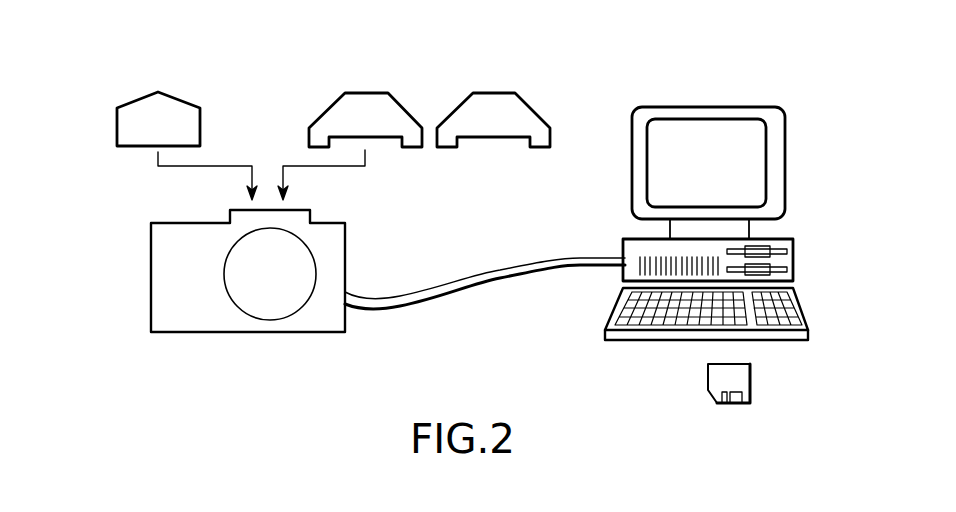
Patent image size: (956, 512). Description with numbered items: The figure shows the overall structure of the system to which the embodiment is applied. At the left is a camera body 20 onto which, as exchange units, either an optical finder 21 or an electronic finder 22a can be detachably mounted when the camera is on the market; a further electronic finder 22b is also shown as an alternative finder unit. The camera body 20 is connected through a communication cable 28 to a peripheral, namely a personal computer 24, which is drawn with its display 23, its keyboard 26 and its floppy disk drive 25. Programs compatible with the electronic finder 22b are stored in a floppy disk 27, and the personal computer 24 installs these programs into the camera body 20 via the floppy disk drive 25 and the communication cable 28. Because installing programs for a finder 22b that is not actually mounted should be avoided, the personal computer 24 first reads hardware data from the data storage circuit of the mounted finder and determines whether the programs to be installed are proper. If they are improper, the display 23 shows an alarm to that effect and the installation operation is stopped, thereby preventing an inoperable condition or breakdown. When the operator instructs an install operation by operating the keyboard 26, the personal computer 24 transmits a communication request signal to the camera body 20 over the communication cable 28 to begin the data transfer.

The camera body 20 is at (192, 333).
The optical finder 21 is at (181, 97).
The electronic finder 22a is at (396, 99).
The electronic finder 22b is at (523, 99).
The display 23 is at (636, 170).
The personal computer 24 is at (632, 231).
The floppy disk drive 25 is at (794, 249).
The keyboard 26 is at (610, 310).
The floppy disk 27 is at (708, 383).
The communication cable 28 is at (428, 294).